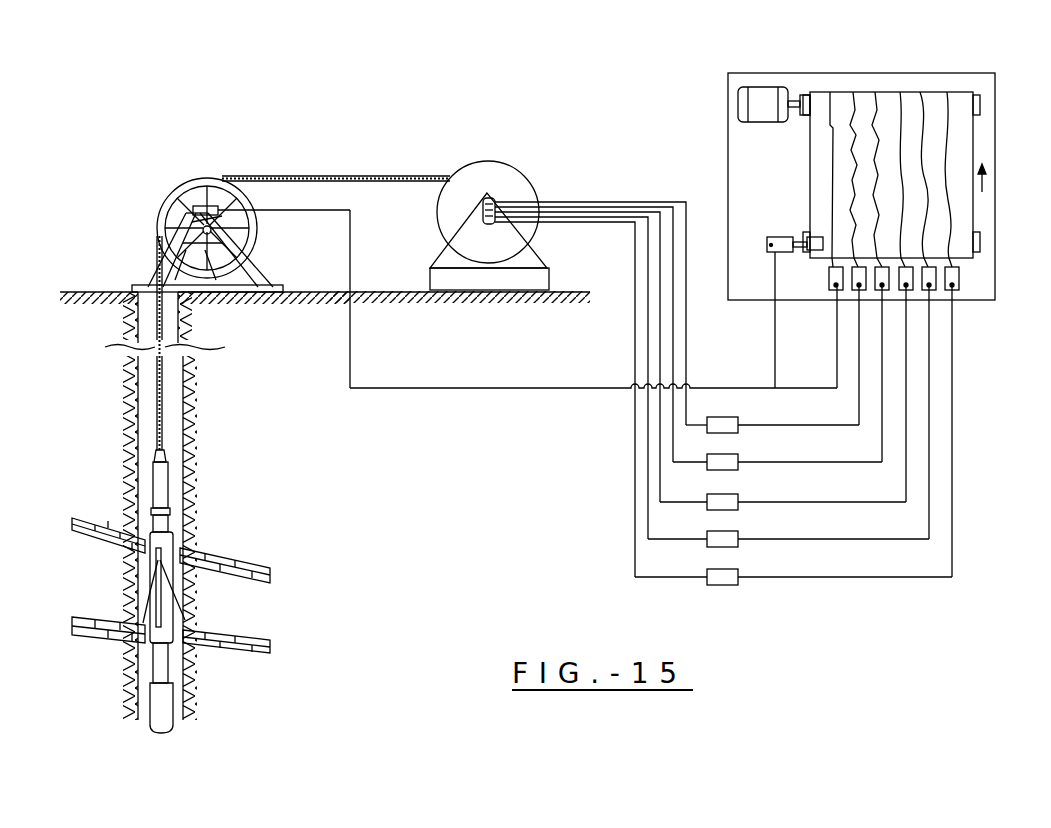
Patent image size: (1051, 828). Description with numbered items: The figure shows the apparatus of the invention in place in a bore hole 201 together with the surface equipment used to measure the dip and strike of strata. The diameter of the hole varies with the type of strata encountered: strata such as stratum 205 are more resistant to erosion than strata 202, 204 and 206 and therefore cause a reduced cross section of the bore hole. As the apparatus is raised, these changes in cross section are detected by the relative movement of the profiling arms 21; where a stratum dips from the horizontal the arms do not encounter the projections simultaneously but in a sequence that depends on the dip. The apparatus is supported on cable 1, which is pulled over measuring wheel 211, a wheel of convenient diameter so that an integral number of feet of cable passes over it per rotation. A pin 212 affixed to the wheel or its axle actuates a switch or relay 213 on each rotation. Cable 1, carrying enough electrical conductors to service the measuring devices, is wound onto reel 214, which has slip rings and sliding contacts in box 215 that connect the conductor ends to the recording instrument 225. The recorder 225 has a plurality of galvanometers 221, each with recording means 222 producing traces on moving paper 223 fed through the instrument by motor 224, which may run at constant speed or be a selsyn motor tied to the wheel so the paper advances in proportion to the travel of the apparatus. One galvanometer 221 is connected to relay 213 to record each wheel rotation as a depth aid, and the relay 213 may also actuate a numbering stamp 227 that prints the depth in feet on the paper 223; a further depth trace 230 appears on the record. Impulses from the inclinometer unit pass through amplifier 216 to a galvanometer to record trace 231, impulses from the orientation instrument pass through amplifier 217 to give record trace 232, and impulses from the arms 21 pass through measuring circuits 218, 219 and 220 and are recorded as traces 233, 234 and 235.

The cable 1 is at (157, 405).
The profiling arms 21 is at (147, 612).
The bore hole 201 is at (138, 328).
The stratum 202 is at (196, 514).
The stratum 204 is at (122, 570).
The stratum 205 is at (240, 652).
The stratum 206 is at (197, 696).
The measuring wheel 211 is at (178, 190).
The pin 212 is at (228, 236).
The switch or relay 213 is at (205, 205).
The reel 214 is at (494, 166).
The box 215 is at (487, 226).
The amplifier 216 is at (737, 418).
The amplifier 217 is at (737, 456).
The measuring circuit 218 is at (737, 495).
The measuring circuit 219 is at (737, 532).
The measuring circuit 220 is at (737, 571).
The galvanometers 221 is at (960, 280).
The recording means 222 is at (955, 257).
The moving paper 223 is at (981, 200).
The motor 224 is at (738, 102).
The recording instrument 225 is at (728, 163).
The numbering stamp 227 is at (784, 230).
The depth trace 230 is at (828, 151).
The trace 231 is at (852, 177).
The record trace 232 is at (872, 102).
The trace 233 is at (900, 102).
The trace 234 is at (928, 100).
The trace 235 is at (946, 138).